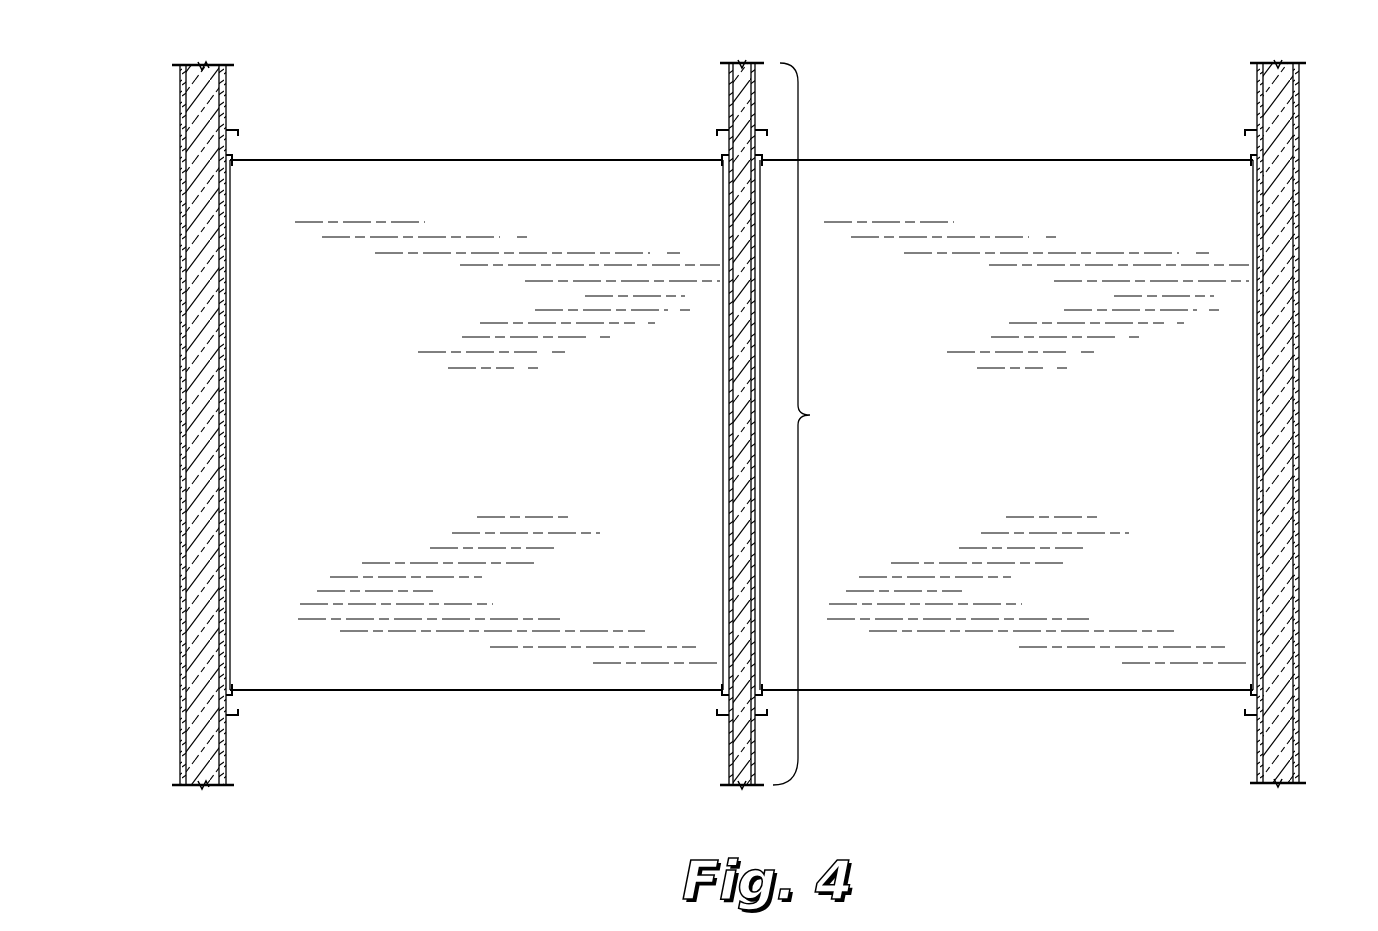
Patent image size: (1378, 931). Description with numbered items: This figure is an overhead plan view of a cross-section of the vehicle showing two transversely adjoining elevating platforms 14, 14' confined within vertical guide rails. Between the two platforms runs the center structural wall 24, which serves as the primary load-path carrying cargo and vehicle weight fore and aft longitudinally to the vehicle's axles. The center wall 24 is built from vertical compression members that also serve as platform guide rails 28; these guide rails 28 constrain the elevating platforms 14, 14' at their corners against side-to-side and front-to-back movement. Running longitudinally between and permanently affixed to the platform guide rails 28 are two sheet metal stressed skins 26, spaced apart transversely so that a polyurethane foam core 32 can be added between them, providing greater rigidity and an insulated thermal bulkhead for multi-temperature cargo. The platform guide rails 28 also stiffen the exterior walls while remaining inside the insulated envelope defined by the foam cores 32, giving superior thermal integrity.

The elevating platform 14 is at (476, 425).
The elevating platform 14' is at (1006, 425).
The center structural wall 24 is at (814, 424).
The stressed skin 26 is at (1257, 92).
The platform guide rail 28 is at (723, 157).
The polyurethane foam core 32 is at (204, 66).